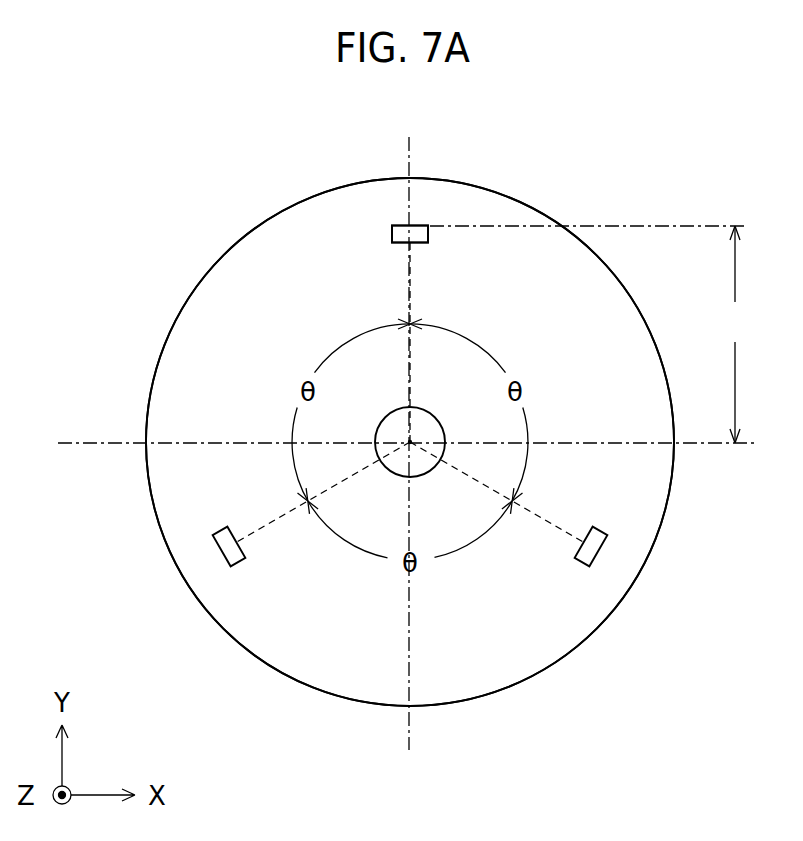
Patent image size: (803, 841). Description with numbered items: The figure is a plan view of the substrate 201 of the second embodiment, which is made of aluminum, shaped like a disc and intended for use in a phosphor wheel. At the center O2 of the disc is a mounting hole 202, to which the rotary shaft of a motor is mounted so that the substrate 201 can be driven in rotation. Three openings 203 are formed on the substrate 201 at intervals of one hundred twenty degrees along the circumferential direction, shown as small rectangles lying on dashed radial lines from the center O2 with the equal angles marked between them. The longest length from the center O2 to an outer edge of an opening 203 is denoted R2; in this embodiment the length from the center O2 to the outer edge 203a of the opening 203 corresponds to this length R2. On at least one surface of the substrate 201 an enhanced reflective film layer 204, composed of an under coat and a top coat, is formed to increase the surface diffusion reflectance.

The substrate 201 is at (165, 338).
The mounting hole 202 is at (384, 414).
The opening 203 is at (394, 229).
The outer edge 203a is at (415, 226).
The enhanced reflective film layer 204 is at (245, 327).
The center O2 is at (412, 447).
The length R2 is at (735, 334).